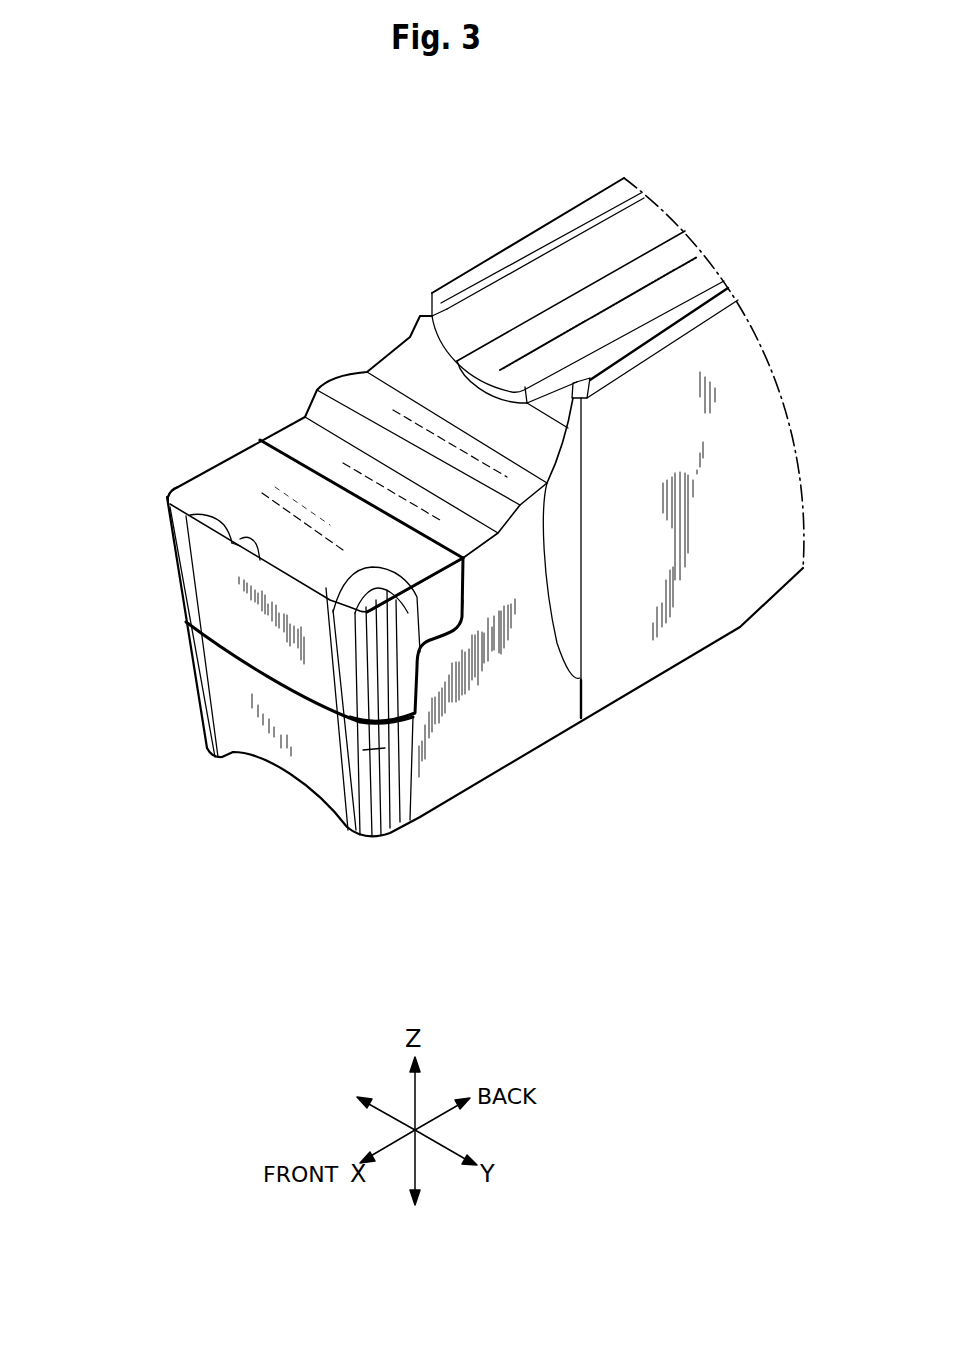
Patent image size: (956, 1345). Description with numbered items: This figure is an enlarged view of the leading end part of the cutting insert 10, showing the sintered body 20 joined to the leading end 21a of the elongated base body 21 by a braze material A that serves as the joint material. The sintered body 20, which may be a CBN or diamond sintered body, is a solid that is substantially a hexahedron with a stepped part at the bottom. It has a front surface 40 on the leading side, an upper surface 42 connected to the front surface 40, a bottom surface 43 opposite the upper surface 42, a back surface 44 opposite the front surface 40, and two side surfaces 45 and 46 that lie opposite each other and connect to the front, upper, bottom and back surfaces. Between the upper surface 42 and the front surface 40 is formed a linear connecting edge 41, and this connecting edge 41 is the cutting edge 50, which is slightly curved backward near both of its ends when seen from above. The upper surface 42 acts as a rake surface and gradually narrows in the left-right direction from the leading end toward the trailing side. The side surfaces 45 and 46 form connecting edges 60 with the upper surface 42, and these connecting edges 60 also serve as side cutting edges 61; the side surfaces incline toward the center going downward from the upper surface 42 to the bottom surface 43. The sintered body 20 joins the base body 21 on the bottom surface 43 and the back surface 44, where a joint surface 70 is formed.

The cutting insert 10 is at (483, 244).
The base body 21 is at (434, 275).
The leading end 21a is at (467, 753).
The sintered body 20 is at (214, 492).
The upper surface 42 is at (255, 463).
The connecting edges 60 is at (232, 452).
The side cutting edges 61 is at (177, 482).
The side surface 46 is at (176, 481).
The connecting edge 41 is at (205, 518).
The cutting edge 50 is at (233, 523).
The front surface 40 is at (237, 613).
The bottom surface 43 is at (407, 727).
The braze material A is at (383, 623).
The back surface 44 is at (462, 590).
The side surface 45 is at (420, 670).
The joint surface 70 is at (407, 613).